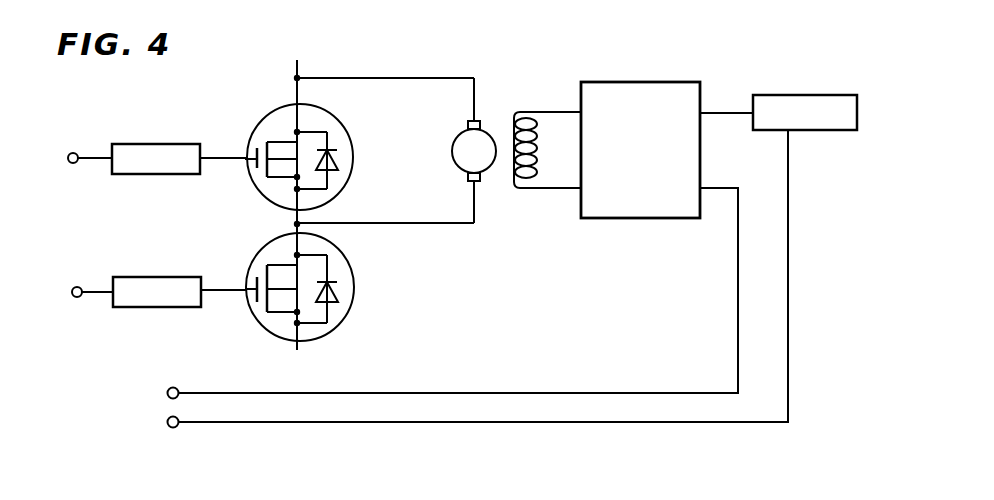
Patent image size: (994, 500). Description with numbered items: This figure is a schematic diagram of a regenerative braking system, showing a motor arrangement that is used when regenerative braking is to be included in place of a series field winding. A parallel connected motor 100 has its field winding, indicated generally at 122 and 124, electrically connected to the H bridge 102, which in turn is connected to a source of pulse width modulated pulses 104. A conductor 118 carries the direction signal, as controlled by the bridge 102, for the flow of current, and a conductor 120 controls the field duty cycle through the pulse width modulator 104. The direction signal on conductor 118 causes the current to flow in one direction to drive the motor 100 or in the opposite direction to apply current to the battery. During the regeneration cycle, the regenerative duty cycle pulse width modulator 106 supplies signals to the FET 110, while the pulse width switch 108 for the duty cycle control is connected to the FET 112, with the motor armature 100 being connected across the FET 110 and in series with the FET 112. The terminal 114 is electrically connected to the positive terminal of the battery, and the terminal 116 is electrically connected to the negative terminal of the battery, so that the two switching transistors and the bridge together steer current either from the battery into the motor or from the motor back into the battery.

The parallel connected motor 100 is at (439, 138).
The H bridge 102 is at (661, 93).
The source of pulse width modulated pulses 104 is at (840, 95).
The regenerative duty cycle pulse width modulator 106 is at (176, 144).
The pulse width switch 108 is at (176, 277).
The FET 110 is at (344, 129).
The FET 112 is at (344, 263).
The terminal 114 is at (298, 62).
The terminal 116 is at (298, 350).
The conductor 118 is at (556, 392).
The conductor 120 is at (558, 421).
The coil 122 is at (549, 190).
The coil winding 124 is at (524, 111).